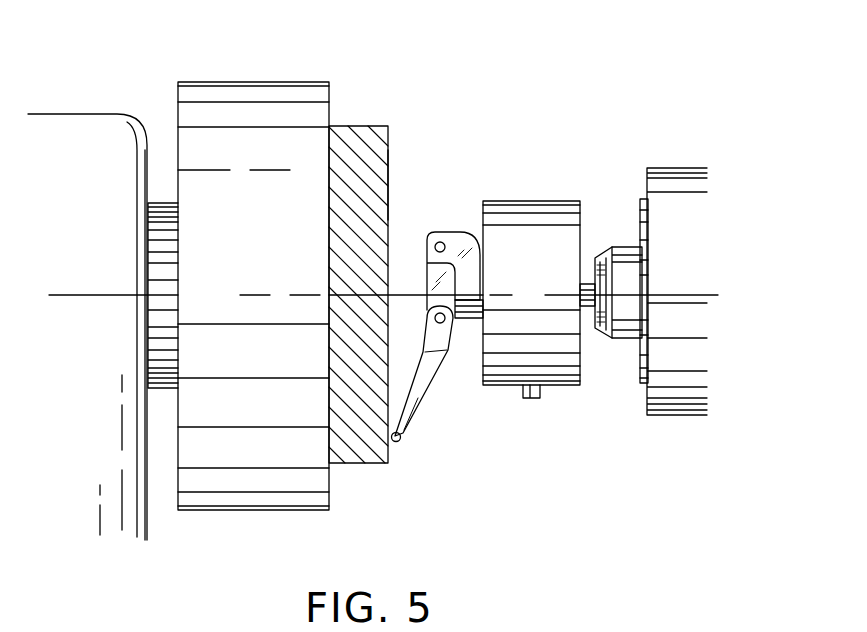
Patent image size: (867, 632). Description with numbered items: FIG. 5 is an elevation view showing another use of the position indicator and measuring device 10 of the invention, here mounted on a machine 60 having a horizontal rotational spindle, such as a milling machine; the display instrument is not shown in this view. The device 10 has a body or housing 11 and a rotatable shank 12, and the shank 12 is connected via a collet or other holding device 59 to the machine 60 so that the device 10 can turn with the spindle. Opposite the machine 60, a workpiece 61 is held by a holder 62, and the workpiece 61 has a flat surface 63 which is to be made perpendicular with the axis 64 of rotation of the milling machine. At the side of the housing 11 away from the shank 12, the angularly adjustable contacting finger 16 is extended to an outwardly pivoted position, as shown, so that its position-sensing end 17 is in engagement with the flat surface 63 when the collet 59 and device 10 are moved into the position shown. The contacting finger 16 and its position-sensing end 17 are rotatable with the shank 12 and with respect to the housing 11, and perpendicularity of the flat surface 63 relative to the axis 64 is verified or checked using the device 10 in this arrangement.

The position indicator and measuring device 10 is at (572, 140).
The body or housing 11 is at (527, 204).
The rotatable shank 12 is at (586, 306).
The contacting finger 16 is at (420, 390).
The position-sensing end 17 is at (400, 444).
The collet or other holding device 59 is at (620, 247).
The machine 60 is at (692, 400).
The workpiece 61 is at (366, 130).
The holder 62 is at (255, 92).
The flat surface 63 is at (388, 187).
The axis of rotation 64 is at (104, 296).